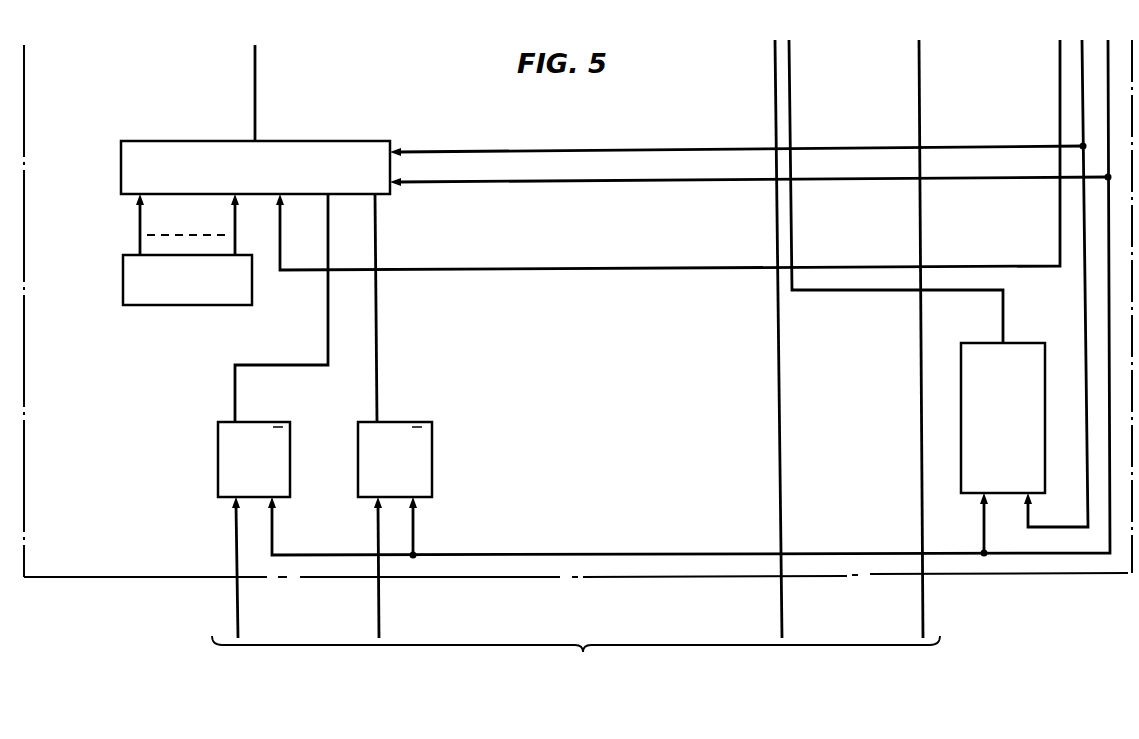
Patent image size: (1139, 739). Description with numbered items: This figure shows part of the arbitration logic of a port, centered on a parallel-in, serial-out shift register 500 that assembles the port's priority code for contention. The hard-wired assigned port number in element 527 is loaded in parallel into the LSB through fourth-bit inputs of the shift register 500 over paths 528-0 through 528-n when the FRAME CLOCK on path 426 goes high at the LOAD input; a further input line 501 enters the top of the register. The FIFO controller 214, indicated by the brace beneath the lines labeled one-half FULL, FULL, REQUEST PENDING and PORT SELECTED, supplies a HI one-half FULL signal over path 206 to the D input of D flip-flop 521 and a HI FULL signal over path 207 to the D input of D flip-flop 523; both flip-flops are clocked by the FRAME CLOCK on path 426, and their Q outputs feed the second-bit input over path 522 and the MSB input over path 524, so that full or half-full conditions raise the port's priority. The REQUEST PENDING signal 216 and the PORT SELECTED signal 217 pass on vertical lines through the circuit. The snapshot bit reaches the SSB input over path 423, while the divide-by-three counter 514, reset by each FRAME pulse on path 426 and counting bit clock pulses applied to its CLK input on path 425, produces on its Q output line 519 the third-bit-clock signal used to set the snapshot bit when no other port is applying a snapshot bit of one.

The shift register 500 is at (180, 141).
The shift register input line 501 is at (257, 116).
The bit clock path 425 is at (537, 152).
The FRAME CLOCK path 426 is at (543, 182).
The snapshot bit path 423 is at (493, 270).
The assigned port number element 527 is at (183, 305).
The port number path 528-0 is at (138, 216).
The port number path 528-n is at (233, 216).
The half-full bit path 522 is at (238, 382).
The full bit path 524 is at (379, 360).
The D flip-flop 521 is at (275, 422).
The D flip-flop 523 is at (407, 422).
The half-full signal path 206 is at (233, 527).
The full signal path 207 is at (377, 538).
The REQUEST PENDING signal path 216 is at (785, 598).
The PORT SELECTED signal path 217 is at (922, 613).
The divide-by-3 counter 514 is at (983, 342).
The counter output line 519 is at (1005, 312).
The FIFO controller 214 is at (576, 679).